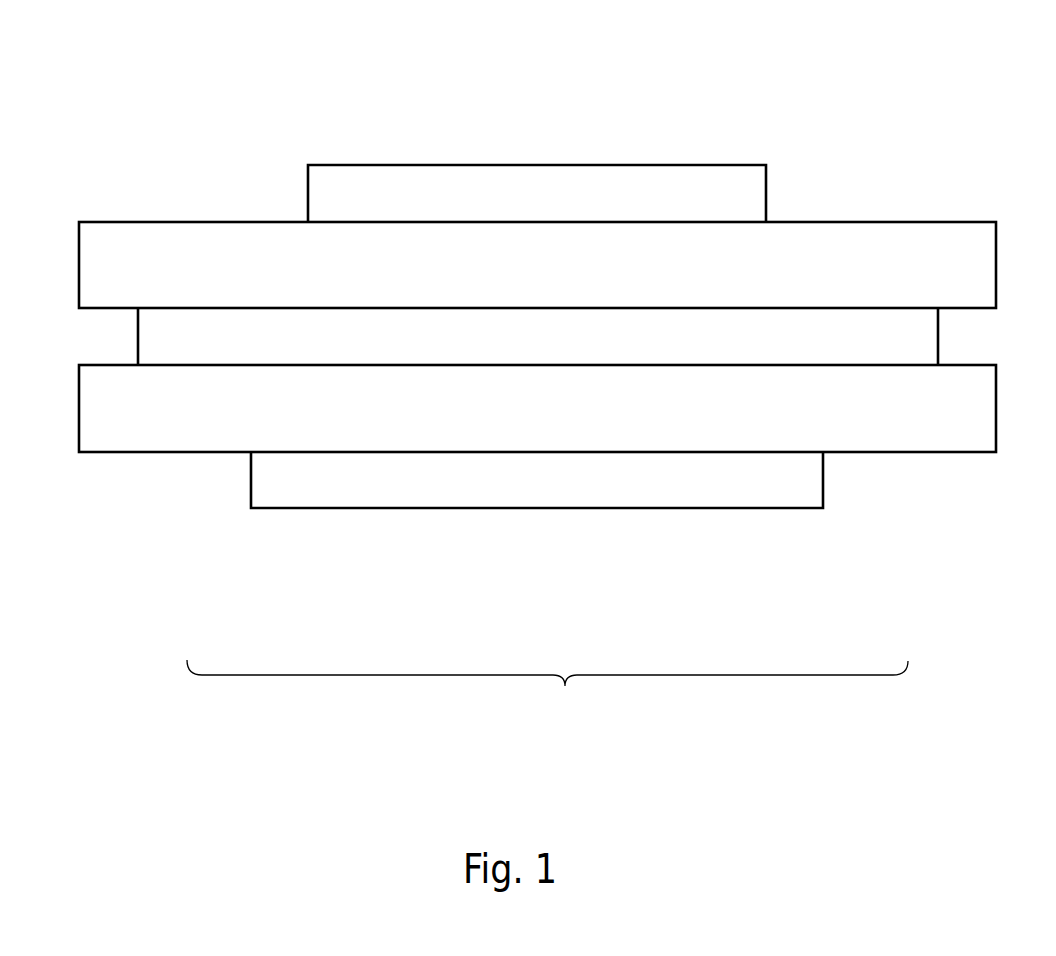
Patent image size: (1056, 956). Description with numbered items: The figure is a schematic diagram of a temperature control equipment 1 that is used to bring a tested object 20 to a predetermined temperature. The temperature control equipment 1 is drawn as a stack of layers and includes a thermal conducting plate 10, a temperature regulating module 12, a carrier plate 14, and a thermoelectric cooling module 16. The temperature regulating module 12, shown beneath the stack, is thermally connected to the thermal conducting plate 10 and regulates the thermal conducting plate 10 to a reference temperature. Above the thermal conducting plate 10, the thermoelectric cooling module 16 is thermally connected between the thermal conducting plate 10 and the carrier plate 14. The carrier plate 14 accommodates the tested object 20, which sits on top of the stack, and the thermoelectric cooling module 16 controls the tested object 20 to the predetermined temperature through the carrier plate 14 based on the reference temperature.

The temperature control equipment 1 is at (547, 693).
The thermal conducting plate 10 is at (212, 435).
The temperature regulating module 12 is at (565, 510).
The carrier plate 14 is at (753, 280).
The thermoelectric cooling module 16 is at (898, 353).
The tested object 20 is at (679, 163).